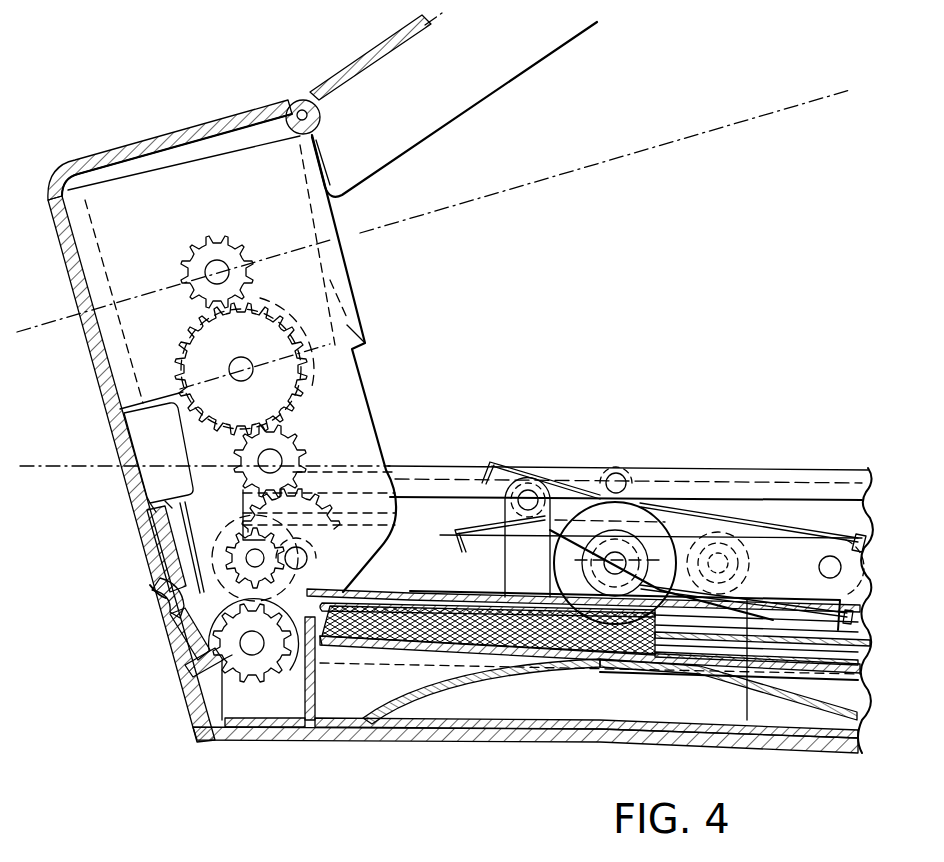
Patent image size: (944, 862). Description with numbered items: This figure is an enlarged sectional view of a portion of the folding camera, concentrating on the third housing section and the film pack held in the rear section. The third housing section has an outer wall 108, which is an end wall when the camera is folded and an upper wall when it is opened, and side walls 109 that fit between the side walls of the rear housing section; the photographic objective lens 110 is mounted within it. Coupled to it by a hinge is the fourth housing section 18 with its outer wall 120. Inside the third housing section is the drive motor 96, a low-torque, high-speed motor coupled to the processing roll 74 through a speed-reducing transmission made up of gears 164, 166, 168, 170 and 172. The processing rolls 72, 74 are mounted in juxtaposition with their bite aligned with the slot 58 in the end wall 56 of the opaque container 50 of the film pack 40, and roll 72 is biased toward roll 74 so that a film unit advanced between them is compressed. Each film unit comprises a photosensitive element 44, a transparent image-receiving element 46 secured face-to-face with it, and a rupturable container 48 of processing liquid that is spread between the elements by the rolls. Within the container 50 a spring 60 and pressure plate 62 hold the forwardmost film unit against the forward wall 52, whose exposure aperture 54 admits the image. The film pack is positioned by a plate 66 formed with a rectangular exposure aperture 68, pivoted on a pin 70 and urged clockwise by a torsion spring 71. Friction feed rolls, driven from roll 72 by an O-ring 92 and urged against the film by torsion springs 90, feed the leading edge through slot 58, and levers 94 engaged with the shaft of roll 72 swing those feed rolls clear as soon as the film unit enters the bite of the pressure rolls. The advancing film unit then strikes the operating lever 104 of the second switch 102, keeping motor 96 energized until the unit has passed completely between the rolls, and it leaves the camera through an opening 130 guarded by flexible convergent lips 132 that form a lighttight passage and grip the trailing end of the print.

The fourth housing section 18 is at (347, 66).
The outer wall 120 is at (398, 34).
The outer wall 108 is at (138, 142).
The photographic objective lens 110 is at (101, 350).
The side walls 109 is at (362, 407).
The drive motor 96 is at (366, 318).
The gear 164 is at (232, 246).
The gear 166 is at (282, 320).
The gear 168 is at (298, 450).
The gear 170 is at (326, 504).
The roll 72 is at (300, 536).
The roll 74 is at (253, 686).
The second switch 102 is at (140, 447).
The operating lever 104 is at (148, 532).
The opening 130 is at (146, 576).
The flexible convergent lips 132 is at (157, 592).
The slot 58 is at (212, 638).
The gear 172 is at (185, 672).
The end wall 56 is at (275, 745).
The opaque container 50 is at (355, 747).
The film pack 40 is at (585, 742).
The levers 94 is at (718, 467).
The O-ring 92 is at (428, 520).
The pin 70 is at (530, 492).
The plate 66 is at (630, 522).
The rectangular exposure aperture 68 is at (698, 596).
The torsion spring 71 is at (790, 612).
The torsion springs 90 is at (812, 528).
The exposure aperture 54 is at (735, 600).
The rupturable container 48 is at (418, 662).
The forward wall 52 is at (468, 604).
The pressure plate 62 is at (352, 645).
The image-receiving element 46 is at (835, 650).
The photosensitive element 44 is at (803, 670).
The spring 60 is at (445, 686).